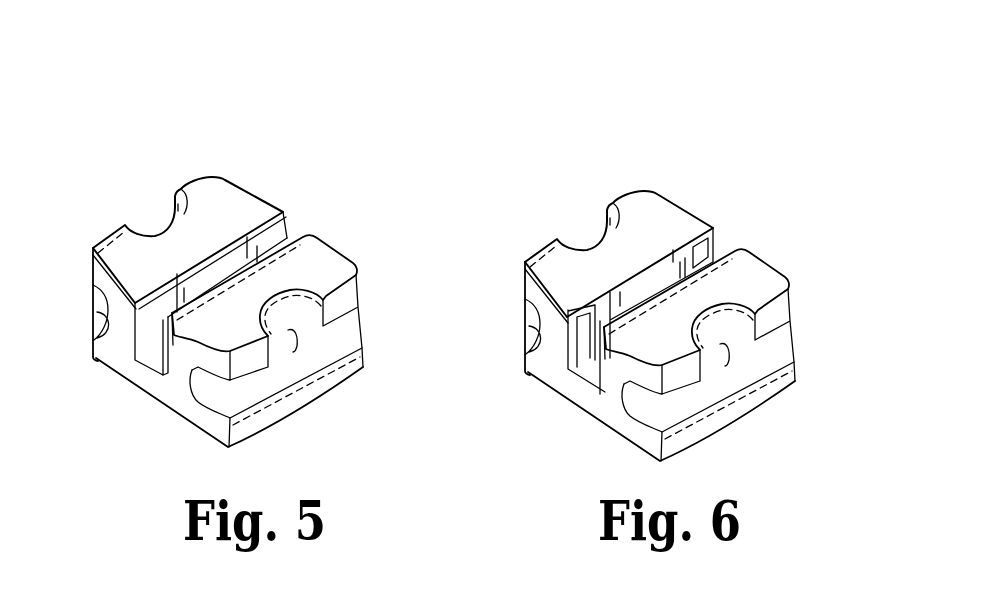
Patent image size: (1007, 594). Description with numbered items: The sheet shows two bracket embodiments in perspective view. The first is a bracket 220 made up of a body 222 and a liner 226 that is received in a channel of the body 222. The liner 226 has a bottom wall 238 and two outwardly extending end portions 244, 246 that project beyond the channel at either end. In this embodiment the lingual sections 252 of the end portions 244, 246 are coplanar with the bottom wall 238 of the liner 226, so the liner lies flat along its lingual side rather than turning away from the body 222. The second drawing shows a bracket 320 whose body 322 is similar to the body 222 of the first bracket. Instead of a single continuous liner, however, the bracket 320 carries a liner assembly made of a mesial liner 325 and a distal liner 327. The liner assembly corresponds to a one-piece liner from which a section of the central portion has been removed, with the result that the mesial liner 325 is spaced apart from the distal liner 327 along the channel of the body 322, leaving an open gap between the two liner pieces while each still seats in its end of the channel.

In FIG. 5, the bracket 220 is at (209, 285).
In FIG. 5, the body 222 is at (364, 250).
In FIG. 5, the liner 226 is at (296, 206).
In FIG. 5, the bottom wall 238 is at (113, 312).
In FIG. 5, the outwardly extending end portion 244 is at (124, 354).
In FIG. 5, the outwardly extending end portion 246 is at (286, 203).
In FIG. 5, the lingual section 252 is at (165, 340).
In FIG. 6, the bracket 320 is at (651, 265).
In FIG. 6, the body 322 is at (796, 264).
In FIG. 6, the mesial liner 325 is at (585, 348).
In FIG. 6, the distal liner 327 is at (706, 254).